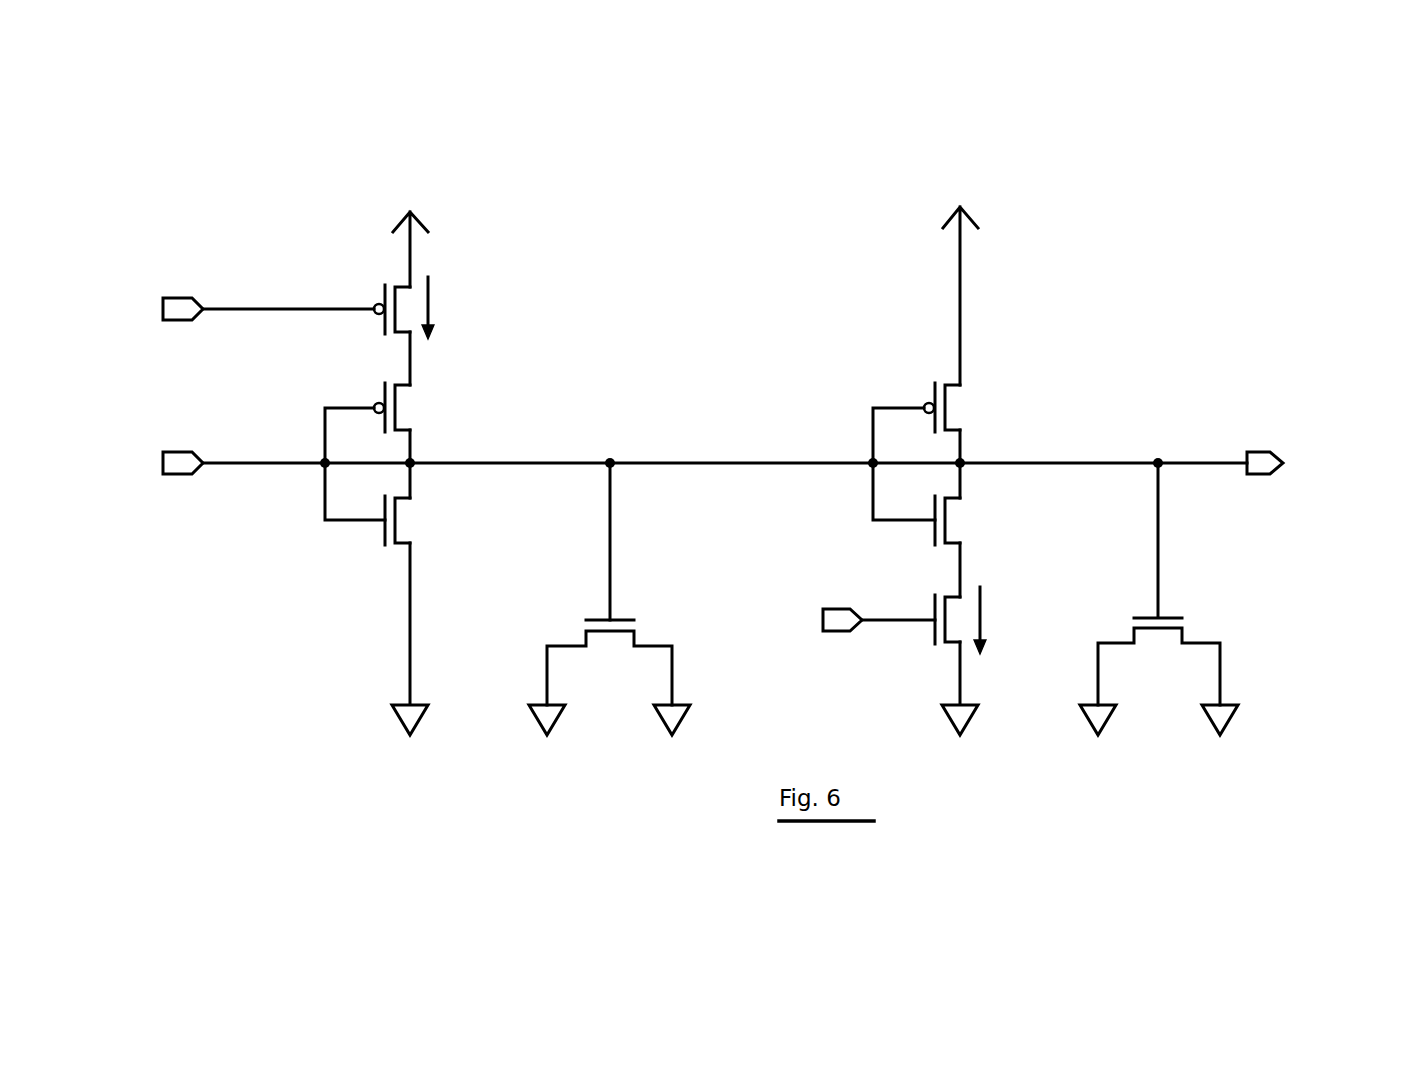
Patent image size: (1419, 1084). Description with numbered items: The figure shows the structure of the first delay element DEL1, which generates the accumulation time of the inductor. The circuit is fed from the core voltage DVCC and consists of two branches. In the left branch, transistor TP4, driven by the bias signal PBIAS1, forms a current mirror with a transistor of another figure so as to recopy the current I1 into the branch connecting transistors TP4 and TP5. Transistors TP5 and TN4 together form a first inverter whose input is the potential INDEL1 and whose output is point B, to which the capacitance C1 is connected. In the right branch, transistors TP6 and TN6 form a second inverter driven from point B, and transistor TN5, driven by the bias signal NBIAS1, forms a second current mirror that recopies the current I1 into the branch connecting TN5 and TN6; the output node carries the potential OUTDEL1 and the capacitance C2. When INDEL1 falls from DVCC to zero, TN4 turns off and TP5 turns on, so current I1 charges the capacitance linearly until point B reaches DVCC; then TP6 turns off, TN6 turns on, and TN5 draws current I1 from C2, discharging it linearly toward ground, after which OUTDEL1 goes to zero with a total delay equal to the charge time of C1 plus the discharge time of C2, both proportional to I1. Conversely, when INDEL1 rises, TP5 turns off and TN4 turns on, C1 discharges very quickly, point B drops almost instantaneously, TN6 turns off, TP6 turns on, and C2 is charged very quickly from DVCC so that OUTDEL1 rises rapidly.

The transistor TP4 is at (367, 335).
The transistor TP5 is at (396, 451).
The transistor TN4 is at (427, 615).
The transistor TP6 is at (945, 451).
The transistor TN6 is at (978, 546).
The transistor TN5 is at (935, 665).
The capacitance C1 is at (609, 665).
The capacitance C2 is at (1159, 599).
The point B is at (610, 523).
The current I1 is at (717, 465).
The core voltage DVCC is at (684, 282).
The P-bias input PBIAS1 is at (216, 310).
The N-bias input NBIAS1 is at (861, 604).
The potential INDEL1 is at (130, 464).
The potential OUTDEL1 is at (1327, 464).